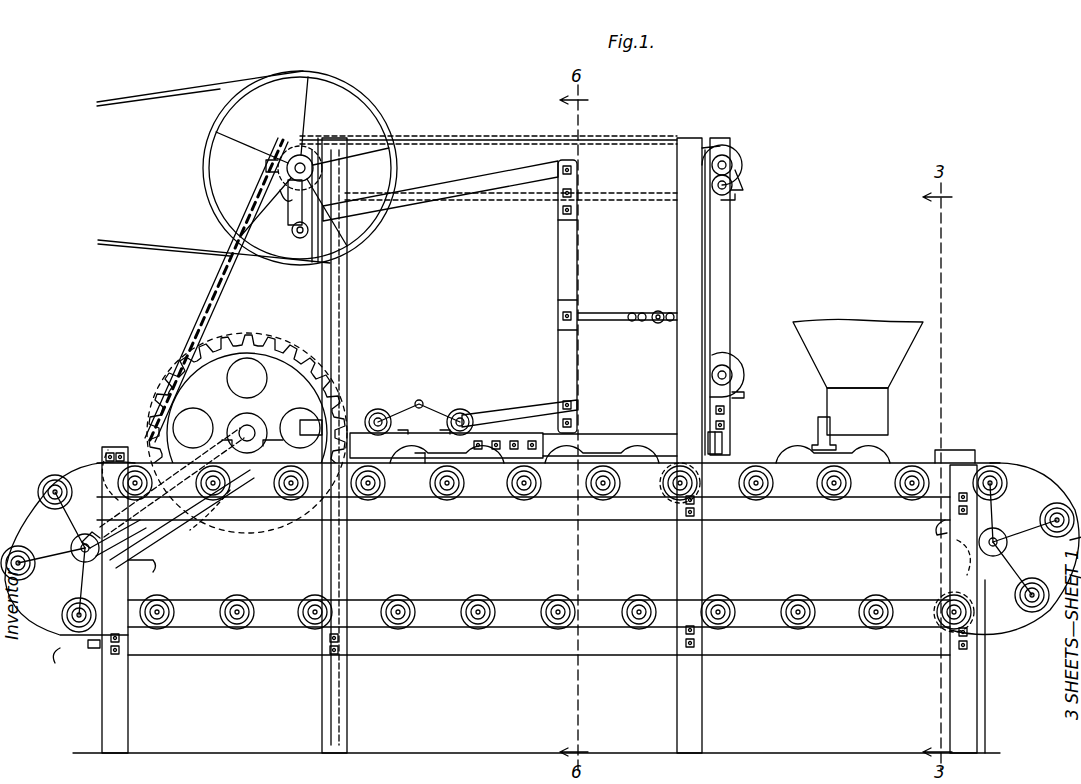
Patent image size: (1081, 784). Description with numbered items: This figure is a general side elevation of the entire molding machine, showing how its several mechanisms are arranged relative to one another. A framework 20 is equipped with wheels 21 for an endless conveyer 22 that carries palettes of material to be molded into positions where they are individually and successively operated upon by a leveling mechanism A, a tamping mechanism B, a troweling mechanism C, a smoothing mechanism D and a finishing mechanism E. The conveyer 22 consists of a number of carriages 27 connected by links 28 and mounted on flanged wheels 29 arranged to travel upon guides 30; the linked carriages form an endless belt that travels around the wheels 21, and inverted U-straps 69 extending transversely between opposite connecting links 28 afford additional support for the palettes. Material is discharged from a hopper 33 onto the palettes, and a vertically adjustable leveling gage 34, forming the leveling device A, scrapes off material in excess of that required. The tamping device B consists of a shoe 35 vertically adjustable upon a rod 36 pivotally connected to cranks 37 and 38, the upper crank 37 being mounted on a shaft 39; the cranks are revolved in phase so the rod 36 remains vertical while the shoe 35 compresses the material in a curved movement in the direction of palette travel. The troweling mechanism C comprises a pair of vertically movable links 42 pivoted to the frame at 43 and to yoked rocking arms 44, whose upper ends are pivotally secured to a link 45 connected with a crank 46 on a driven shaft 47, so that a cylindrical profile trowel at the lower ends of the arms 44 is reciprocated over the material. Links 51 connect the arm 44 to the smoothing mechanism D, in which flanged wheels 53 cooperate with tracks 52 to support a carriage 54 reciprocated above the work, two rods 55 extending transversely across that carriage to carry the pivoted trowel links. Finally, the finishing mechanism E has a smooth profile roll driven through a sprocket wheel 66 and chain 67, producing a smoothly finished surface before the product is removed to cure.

The framework 20 is at (347, 556).
The wheels 21 is at (140, 572).
The endless conveyer 22 is at (517, 606).
The carriages 27 is at (410, 487).
The links 28 is at (490, 487).
The flanged wheels 29 is at (590, 487).
The guides 30 is at (620, 484).
The hopper 33 is at (858, 377).
The leveling gage 34 is at (815, 443).
The shoe 35 is at (722, 444).
The rod 36 is at (730, 300).
The crank 37 is at (735, 185).
The crank 38 is at (735, 372).
The shaft 39 is at (735, 162).
The links 42 is at (603, 312).
The pivot 43 is at (660, 311).
The rocking arms 44 is at (556, 349).
The link 45 is at (457, 184).
The crank 46 is at (292, 212).
The driven shaft 47 is at (298, 165).
The links 51 is at (514, 412).
The tracks 52 is at (446, 445).
The flanged wheels 53 is at (465, 412).
The carriage 54 is at (433, 410).
The rods 55 is at (381, 410).
The sprocket wheel 66 is at (247, 433).
The chain 67 is at (185, 319).
The inverted U-straps 69 is at (970, 460).
The leveling mechanism A is at (817, 420).
The tamping mechanism B is at (737, 420).
The troweling mechanism C is at (584, 428).
The smoothing mechanism D is at (422, 391).
The finishing mechanism E is at (269, 402).